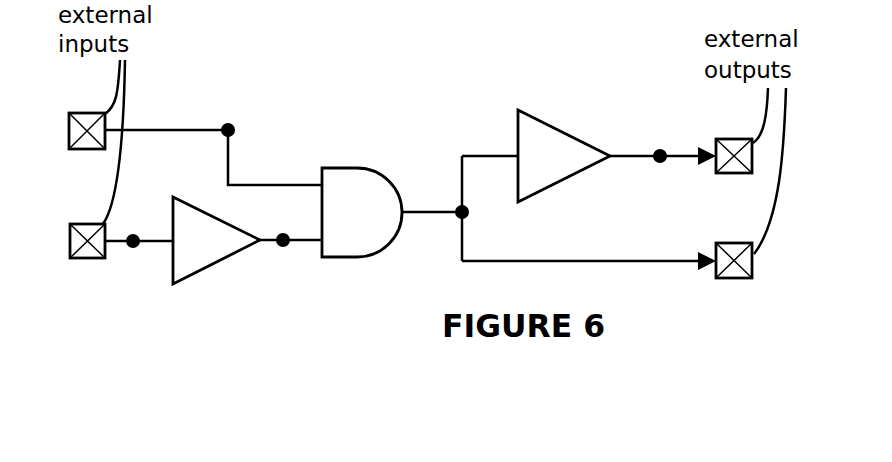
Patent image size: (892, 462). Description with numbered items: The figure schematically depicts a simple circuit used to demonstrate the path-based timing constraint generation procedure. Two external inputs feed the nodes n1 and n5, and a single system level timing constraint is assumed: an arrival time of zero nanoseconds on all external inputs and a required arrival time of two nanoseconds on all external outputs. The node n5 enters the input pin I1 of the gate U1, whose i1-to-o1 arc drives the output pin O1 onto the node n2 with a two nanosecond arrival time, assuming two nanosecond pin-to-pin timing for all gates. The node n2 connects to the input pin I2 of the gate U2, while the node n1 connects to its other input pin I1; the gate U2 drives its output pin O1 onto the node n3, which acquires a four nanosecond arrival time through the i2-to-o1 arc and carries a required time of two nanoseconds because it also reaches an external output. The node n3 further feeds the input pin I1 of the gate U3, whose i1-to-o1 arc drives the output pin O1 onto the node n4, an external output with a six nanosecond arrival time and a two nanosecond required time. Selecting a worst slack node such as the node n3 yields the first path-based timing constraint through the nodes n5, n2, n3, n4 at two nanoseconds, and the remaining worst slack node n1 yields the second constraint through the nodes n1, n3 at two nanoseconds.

The node n1 is at (213, 137).
The node n2 is at (291, 225).
The node n3 is at (559, 213).
The node n4 is at (663, 141).
The node n5 is at (139, 225).
The gate u1 U1 is at (216, 247).
The gate u2 U2 is at (362, 230).
The gate u3 U3 is at (564, 164).
The input pin i1 I1 is at (338, 185).
The input pin i2 I2 is at (338, 239).
The output pin o1 O1 is at (377, 214).